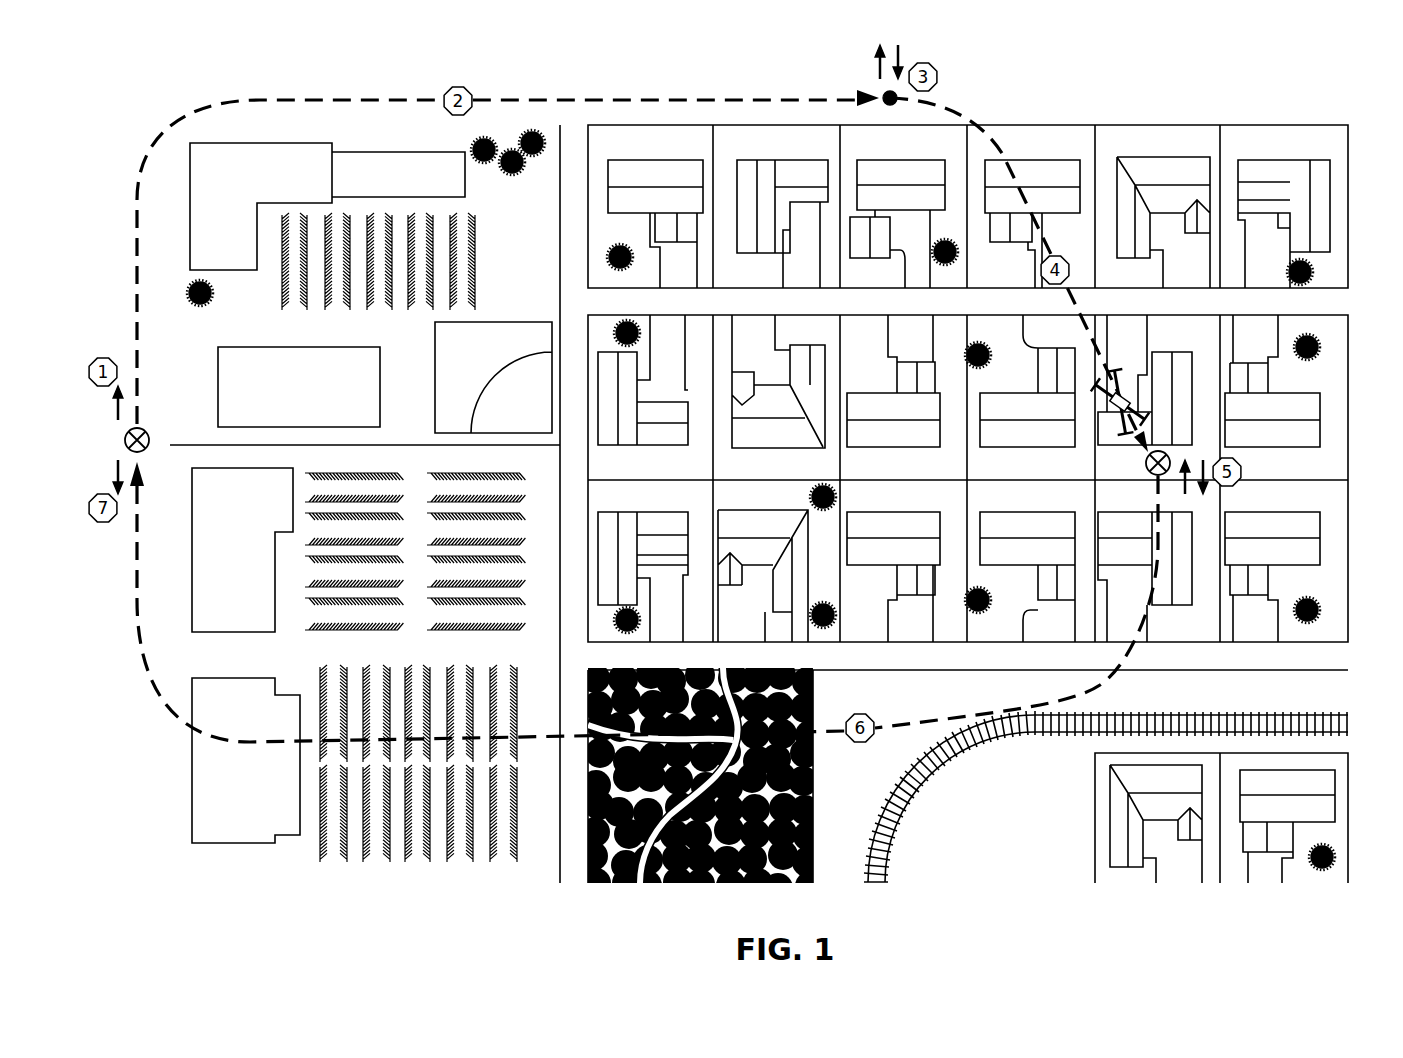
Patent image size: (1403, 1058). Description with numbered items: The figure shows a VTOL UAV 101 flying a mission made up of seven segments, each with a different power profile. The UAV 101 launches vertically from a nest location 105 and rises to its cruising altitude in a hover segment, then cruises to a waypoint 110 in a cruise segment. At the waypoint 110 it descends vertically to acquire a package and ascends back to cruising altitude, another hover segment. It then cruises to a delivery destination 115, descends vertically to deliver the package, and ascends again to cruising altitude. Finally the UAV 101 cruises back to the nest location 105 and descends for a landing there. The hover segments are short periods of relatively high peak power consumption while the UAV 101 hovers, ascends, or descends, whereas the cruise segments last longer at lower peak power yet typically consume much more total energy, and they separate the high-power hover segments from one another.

The VTOL UAV 101 is at (1118, 370).
The nest location 105 is at (146, 431).
The waypoint 110 is at (890, 105).
The delivery destination 115 is at (1170, 455).